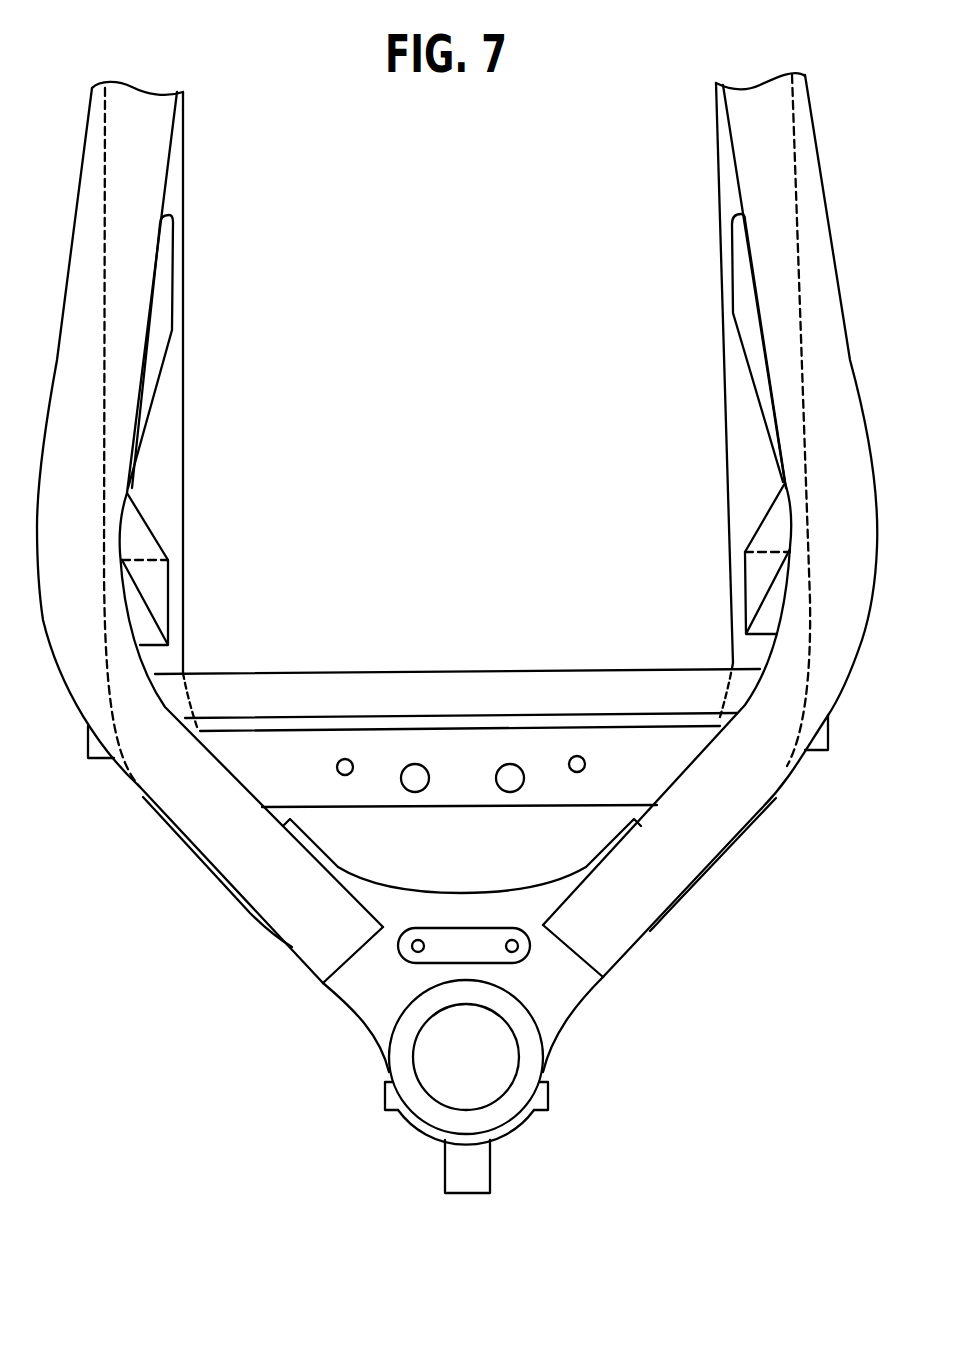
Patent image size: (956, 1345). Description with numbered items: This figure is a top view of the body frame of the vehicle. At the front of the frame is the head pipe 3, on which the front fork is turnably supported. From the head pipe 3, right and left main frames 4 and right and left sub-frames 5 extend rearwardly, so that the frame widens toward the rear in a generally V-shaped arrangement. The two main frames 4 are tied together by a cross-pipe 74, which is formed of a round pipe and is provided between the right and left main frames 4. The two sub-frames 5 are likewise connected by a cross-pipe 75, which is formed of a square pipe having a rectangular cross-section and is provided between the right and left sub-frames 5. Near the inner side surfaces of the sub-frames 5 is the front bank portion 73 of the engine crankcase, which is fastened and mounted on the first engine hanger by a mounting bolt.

The head pipe 3 is at (530, 1062).
The main frame 4 is at (160, 767).
The sub-frame 5 is at (157, 452).
The front bank portion 73 is at (160, 345).
The cross-pipe 74 is at (380, 797).
The cross-pipe 75 is at (462, 682).